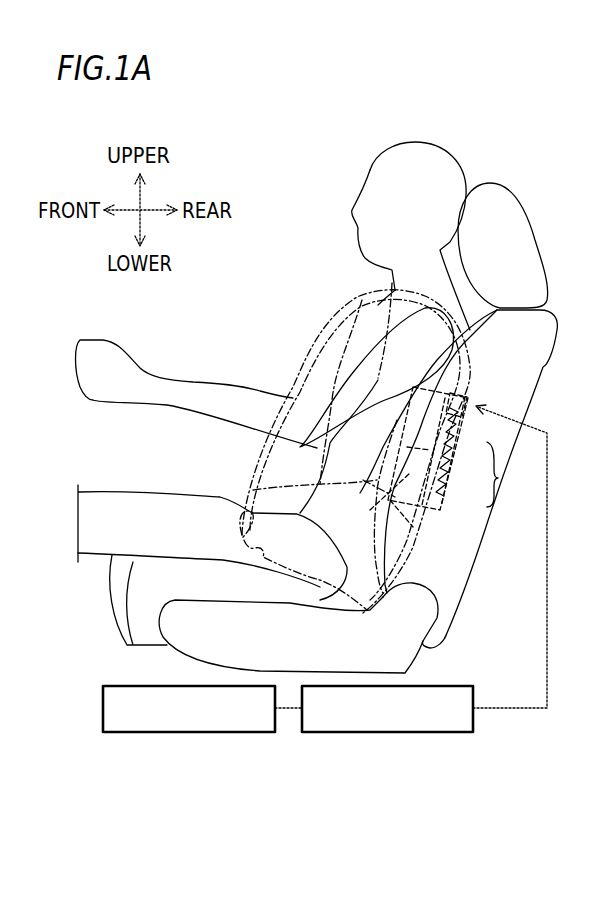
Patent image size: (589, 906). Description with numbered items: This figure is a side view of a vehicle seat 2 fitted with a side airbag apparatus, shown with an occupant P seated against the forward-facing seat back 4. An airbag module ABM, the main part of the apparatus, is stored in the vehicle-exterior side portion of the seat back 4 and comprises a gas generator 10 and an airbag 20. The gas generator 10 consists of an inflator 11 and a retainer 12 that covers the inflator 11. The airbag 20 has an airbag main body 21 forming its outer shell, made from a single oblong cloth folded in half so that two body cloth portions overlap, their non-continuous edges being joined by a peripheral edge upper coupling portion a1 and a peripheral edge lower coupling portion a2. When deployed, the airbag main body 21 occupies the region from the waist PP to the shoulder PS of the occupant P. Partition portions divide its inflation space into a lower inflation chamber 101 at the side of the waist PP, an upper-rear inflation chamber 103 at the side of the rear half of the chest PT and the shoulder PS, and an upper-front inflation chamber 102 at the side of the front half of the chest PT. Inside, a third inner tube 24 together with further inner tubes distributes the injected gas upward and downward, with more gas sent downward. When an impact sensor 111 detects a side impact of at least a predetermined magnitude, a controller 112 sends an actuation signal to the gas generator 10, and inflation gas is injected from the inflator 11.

The occupant P is at (413, 141).
The shoulder PS is at (414, 302).
The chest PT is at (337, 374).
The waist PP is at (355, 577).
The airbag module ABM is at (490, 361).
The vehicle seat 2 is at (546, 372).
The seat back 4 is at (463, 551).
The gas generator 10 is at (455, 448).
The inflator 11 is at (436, 487).
The retainer 12 is at (450, 440).
The airbag 20 is at (343, 307).
The airbag main body 21 is at (333, 332).
The third inner tube 24 is at (380, 463).
The lower inflation chamber 101 is at (367, 527).
The upper-front inflation chamber 102 is at (330, 437).
The upper-rear inflation chamber 103 is at (430, 364).
The peripheral edge upper coupling portion a1 is at (312, 342).
The peripheral edge lower coupling portion a2 is at (300, 590).
The impact sensor 111 is at (198, 733).
The controller 112 is at (370, 733).